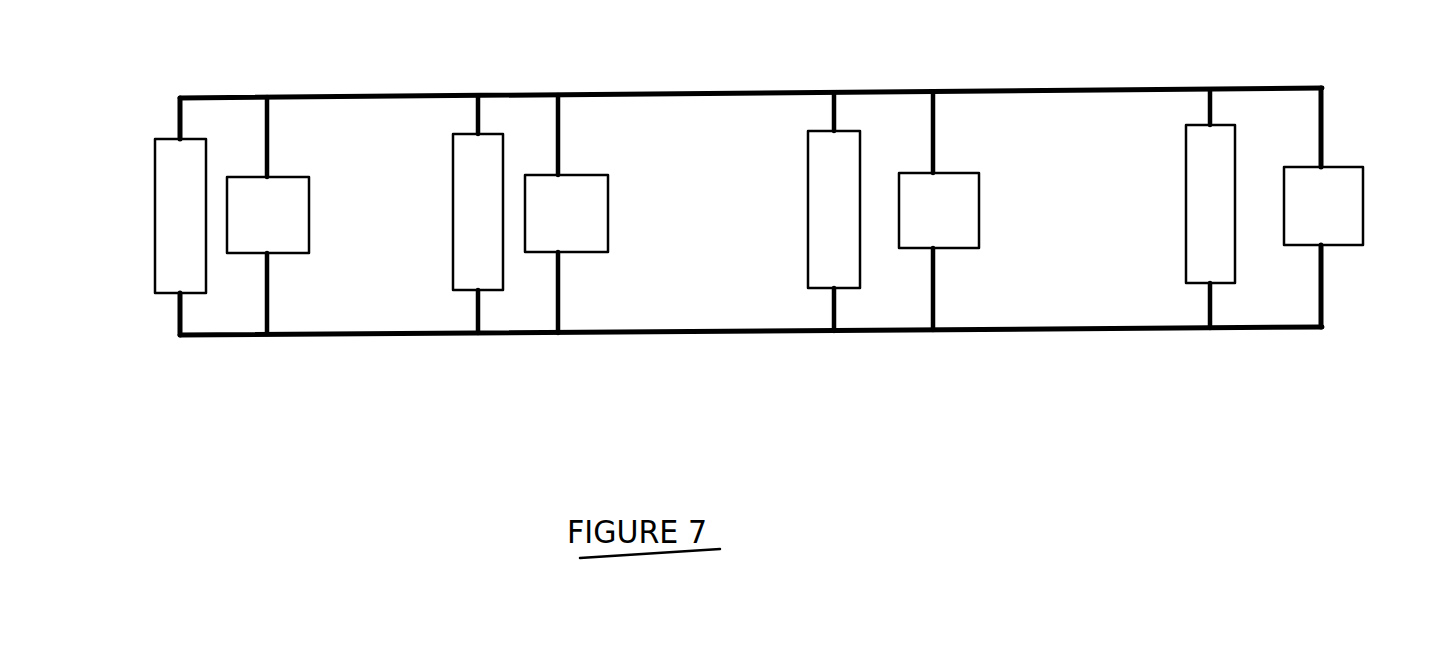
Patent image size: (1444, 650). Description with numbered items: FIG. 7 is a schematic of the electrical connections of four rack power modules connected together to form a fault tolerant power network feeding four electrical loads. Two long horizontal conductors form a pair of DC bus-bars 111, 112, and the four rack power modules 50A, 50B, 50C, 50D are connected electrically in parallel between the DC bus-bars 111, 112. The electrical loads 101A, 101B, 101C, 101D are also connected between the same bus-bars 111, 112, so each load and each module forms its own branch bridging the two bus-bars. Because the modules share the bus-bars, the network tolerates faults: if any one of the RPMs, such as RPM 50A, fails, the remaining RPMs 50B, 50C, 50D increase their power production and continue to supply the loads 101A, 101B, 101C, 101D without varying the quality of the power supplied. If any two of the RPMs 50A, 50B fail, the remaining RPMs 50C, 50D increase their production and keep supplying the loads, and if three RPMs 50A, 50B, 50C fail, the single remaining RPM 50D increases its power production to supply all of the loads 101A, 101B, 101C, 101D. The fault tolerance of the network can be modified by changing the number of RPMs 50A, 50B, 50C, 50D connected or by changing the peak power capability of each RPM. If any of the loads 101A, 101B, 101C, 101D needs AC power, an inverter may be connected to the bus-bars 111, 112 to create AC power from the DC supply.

The DC bus-bar 112 is at (665, 94).
The DC bus-bar 111 is at (640, 333).
The electrical load 101A is at (155, 283).
The electrical load 101B is at (453, 268).
The electrical load 101C is at (808, 225).
The electrical load 101D is at (1186, 212).
The rack power module 50A is at (312, 190).
The rack power module 50B is at (608, 192).
The rack power module 50C is at (965, 172).
The rack power module 50D is at (1363, 165).